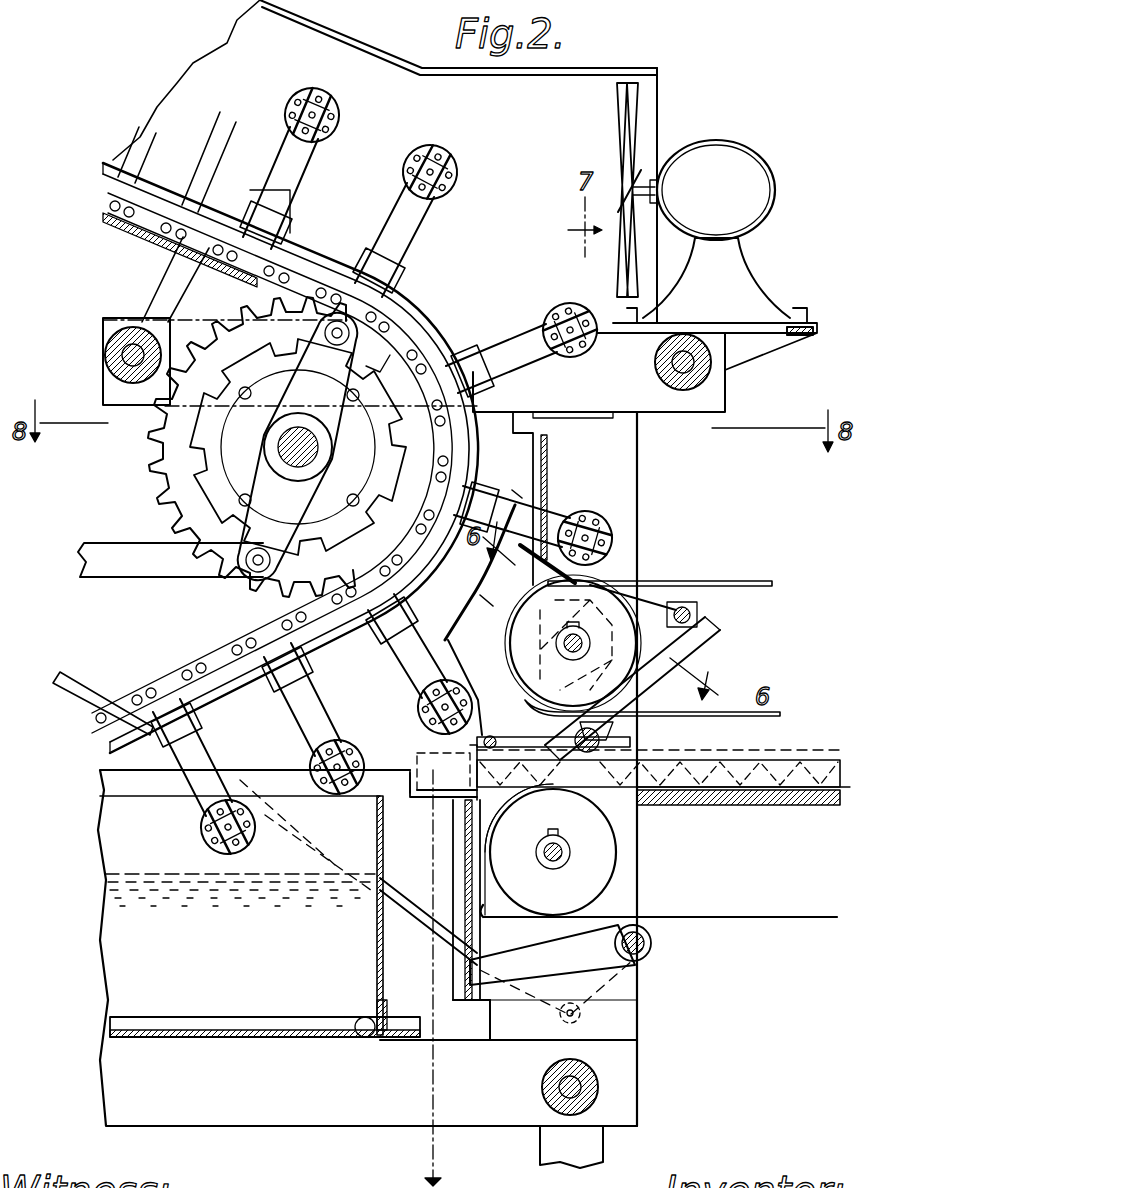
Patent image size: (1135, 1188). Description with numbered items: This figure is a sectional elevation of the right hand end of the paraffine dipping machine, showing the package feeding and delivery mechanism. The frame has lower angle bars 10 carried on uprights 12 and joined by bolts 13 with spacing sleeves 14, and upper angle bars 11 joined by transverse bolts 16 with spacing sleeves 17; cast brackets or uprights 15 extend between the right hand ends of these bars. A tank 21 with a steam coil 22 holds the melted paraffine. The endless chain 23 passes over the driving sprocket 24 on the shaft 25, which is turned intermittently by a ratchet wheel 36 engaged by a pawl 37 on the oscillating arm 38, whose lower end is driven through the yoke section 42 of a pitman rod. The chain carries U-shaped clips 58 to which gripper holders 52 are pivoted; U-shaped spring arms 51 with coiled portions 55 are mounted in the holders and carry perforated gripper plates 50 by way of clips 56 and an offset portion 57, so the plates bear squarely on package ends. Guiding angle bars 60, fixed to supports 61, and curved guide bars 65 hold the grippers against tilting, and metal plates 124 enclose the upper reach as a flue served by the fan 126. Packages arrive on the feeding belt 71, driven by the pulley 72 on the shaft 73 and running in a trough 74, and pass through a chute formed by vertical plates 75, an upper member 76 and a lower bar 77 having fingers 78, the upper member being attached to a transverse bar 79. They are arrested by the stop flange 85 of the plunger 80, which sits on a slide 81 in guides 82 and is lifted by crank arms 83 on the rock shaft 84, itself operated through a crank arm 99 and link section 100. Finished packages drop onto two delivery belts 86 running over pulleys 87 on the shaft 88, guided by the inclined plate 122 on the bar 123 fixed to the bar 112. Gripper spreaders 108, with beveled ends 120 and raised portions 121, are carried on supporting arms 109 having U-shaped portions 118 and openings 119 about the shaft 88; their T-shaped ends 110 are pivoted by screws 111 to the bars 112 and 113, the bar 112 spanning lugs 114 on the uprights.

The lower angle bars 10 is at (482, 1108).
The upper angle bars 11 is at (622, 372).
The uprights 12 is at (590, 1140).
The bolts 13 is at (583, 1085).
The spacing sleeves 14 is at (598, 1104).
The brackets or uprights 15 is at (620, 1000).
The transverse bolts 16 is at (125, 375).
The spacing sleeves 17 is at (105, 354).
The tank 21 is at (383, 940).
The steam coil 22 is at (240, 1020).
The endless chain 23 is at (222, 655).
The driving sprocket 24 is at (170, 482).
The shaft 25 is at (280, 455).
The ratchet wheel 36 is at (338, 520).
The pawl 37 is at (390, 364).
The oscillating arm 38 is at (310, 490).
The yoke section 42 is at (122, 562).
The gripper plates 50 is at (608, 520).
The spring arms 51 is at (318, 108).
The gripper holders 52 is at (278, 222).
The coiled portions 55 is at (188, 750).
The clips 56 is at (448, 162).
The offset portion 57 is at (453, 766).
The U-shaped clips 58 is at (443, 458).
The guiding angle bars 60 is at (185, 200).
The supports 61 is at (165, 302).
The guide straps or bars 65 is at (338, 615).
The feeding belt 71 is at (735, 917).
The drive pulley 72 is at (600, 852).
The shaft 73 is at (568, 860).
The trough 74 is at (765, 803).
The vertical plates or bars 75 is at (600, 770).
The upper horizontal member 76 is at (580, 722).
The lower horizontal bar 77 is at (505, 830).
The fingers 78 is at (508, 800).
The transverse bar 79 is at (520, 735).
The feeder or plunger 80 is at (440, 802).
The slide 81 is at (460, 858).
The guides 82 is at (465, 925).
The crank arms 83 is at (556, 960).
The rock shaft 84 is at (653, 943).
The stop flange 85 is at (420, 775).
The delivery belts 86 is at (752, 582).
The drive pulleys 87 is at (633, 605).
The transverse shaft 88 is at (580, 640).
The crank arm 99 is at (640, 976).
The link section 100 is at (462, 900).
The gripper spreaders 108 is at (483, 565).
The supporting arms 109 is at (470, 560).
The T-shaped rear ends 110 is at (692, 650).
The pivot screws 111 is at (705, 592).
The transverse bar 112 is at (698, 612).
The transverse bar 113 is at (640, 714).
The lugs 114 is at (655, 594).
The U-shaped central portions 118 is at (573, 643).
The openings 119 is at (572, 625).
The beveled upper end portions 120 is at (545, 470).
The raised central portions 121 is at (493, 600).
The inclined plate 122 is at (585, 570).
The bar 123 is at (640, 572).
The metal plate 124 is at (335, 50).
The fan or blower 126 is at (742, 172).